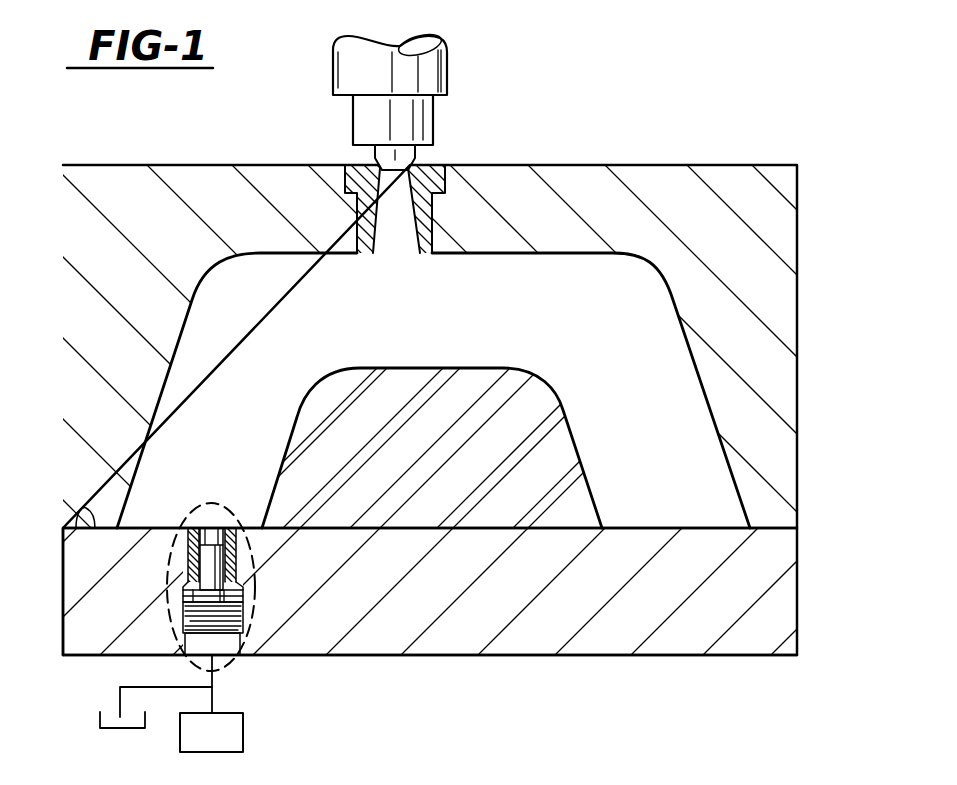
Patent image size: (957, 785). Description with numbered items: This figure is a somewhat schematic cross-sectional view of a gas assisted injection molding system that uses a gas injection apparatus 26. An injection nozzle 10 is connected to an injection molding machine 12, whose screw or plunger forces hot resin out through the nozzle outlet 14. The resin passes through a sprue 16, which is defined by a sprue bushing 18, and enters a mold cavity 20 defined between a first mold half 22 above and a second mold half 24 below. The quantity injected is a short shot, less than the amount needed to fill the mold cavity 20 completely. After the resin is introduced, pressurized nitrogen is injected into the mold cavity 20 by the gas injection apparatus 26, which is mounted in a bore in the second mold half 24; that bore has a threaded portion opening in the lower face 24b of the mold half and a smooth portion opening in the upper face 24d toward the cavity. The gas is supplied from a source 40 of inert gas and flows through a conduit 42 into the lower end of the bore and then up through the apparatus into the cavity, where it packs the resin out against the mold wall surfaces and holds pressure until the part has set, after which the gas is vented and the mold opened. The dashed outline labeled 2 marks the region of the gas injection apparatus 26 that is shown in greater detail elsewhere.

The detail region shown in FIG. 2 is at (226, 505).
The injection nozzle 10 is at (366, 128).
The injection molding machine 12 is at (438, 77).
The nozzle outlet 14 is at (413, 163).
The sprue 16 is at (372, 240).
The sprue bushing 18 is at (433, 222).
The mold cavity 20 is at (584, 258).
The first mold half 22 is at (782, 288).
The second mold half 24 is at (775, 613).
The lower face 24b is at (85, 655).
The upper face 24d is at (76, 514).
The gas injection apparatus 26 is at (284, 574).
The source of inert gas 40 is at (243, 730).
The conduit 42 is at (212, 695).